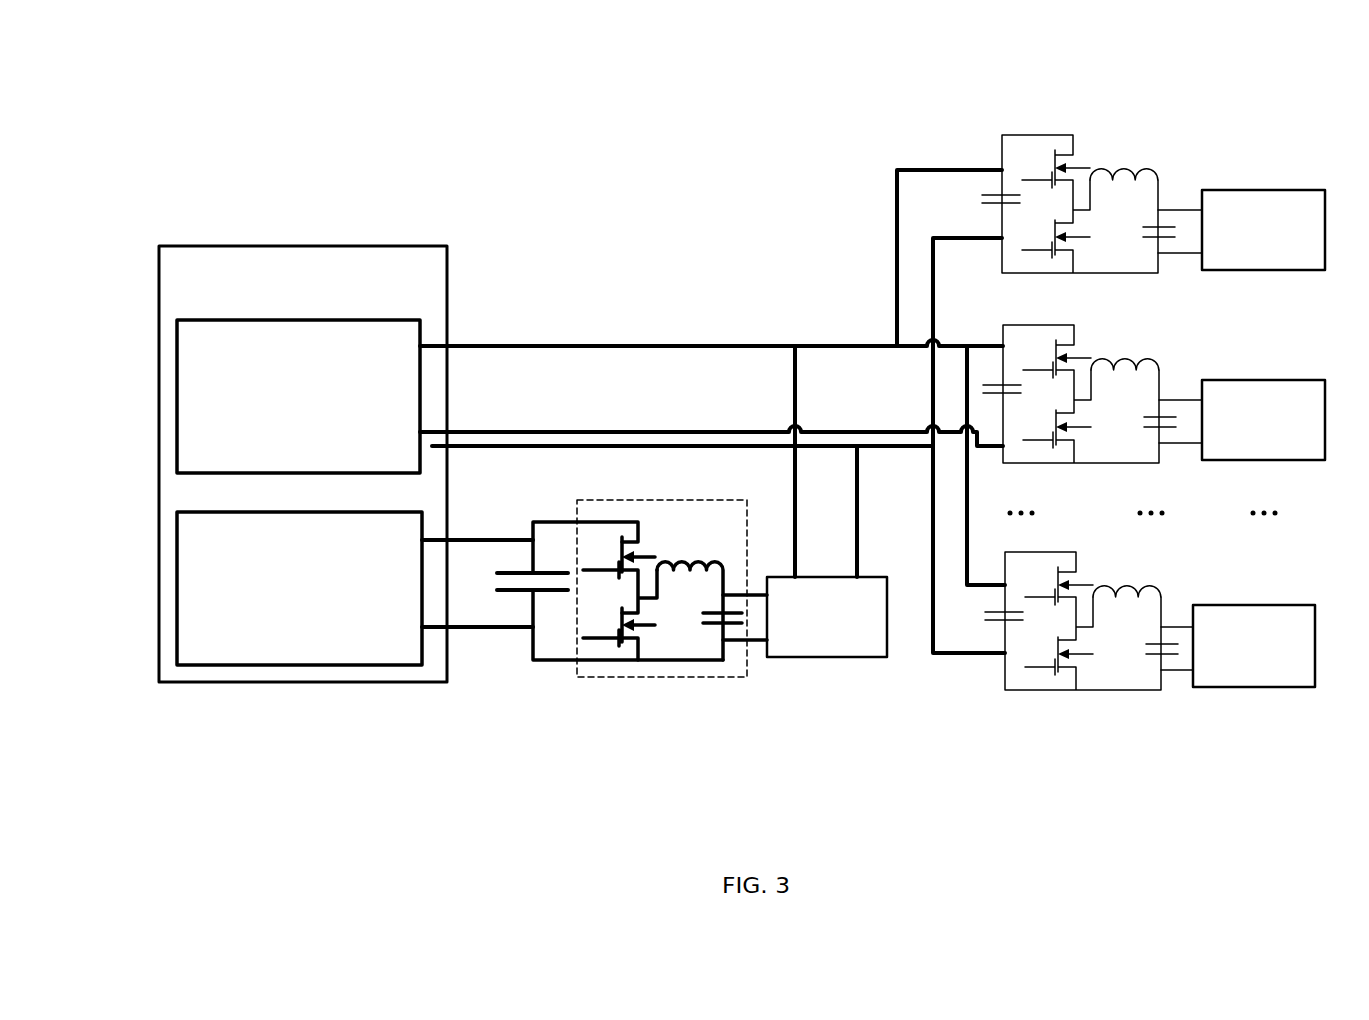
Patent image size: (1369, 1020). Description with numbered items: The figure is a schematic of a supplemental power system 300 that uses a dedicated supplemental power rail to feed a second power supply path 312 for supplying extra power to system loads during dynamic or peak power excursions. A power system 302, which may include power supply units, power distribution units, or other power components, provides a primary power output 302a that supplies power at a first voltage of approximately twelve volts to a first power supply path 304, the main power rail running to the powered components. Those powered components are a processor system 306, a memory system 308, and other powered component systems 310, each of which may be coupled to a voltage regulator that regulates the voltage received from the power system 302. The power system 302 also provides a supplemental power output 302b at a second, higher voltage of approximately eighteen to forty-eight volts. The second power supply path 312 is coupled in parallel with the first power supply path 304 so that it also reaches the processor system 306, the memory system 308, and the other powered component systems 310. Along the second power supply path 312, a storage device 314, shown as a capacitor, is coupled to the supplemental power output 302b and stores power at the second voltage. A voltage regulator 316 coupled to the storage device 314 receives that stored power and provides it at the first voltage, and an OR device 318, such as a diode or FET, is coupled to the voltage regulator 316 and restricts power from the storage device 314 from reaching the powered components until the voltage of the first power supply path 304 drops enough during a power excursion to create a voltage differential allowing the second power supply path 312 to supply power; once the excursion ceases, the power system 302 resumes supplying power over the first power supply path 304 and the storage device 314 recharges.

The supplemental power system 300 is at (224, 117).
The power system 302 is at (427, 282).
The primary power output 302a is at (322, 427).
The supplemental power output 302b is at (277, 631).
The first power supply path 304 is at (625, 432).
The processor system 306 is at (1275, 264).
The memory system 308 is at (1275, 451).
The other powered component systems 310 is at (1235, 677).
The second power supply path 312 is at (458, 625).
The storage device 314 is at (522, 593).
The voltage regulator 316 is at (662, 675).
The OR device 318 is at (845, 642).